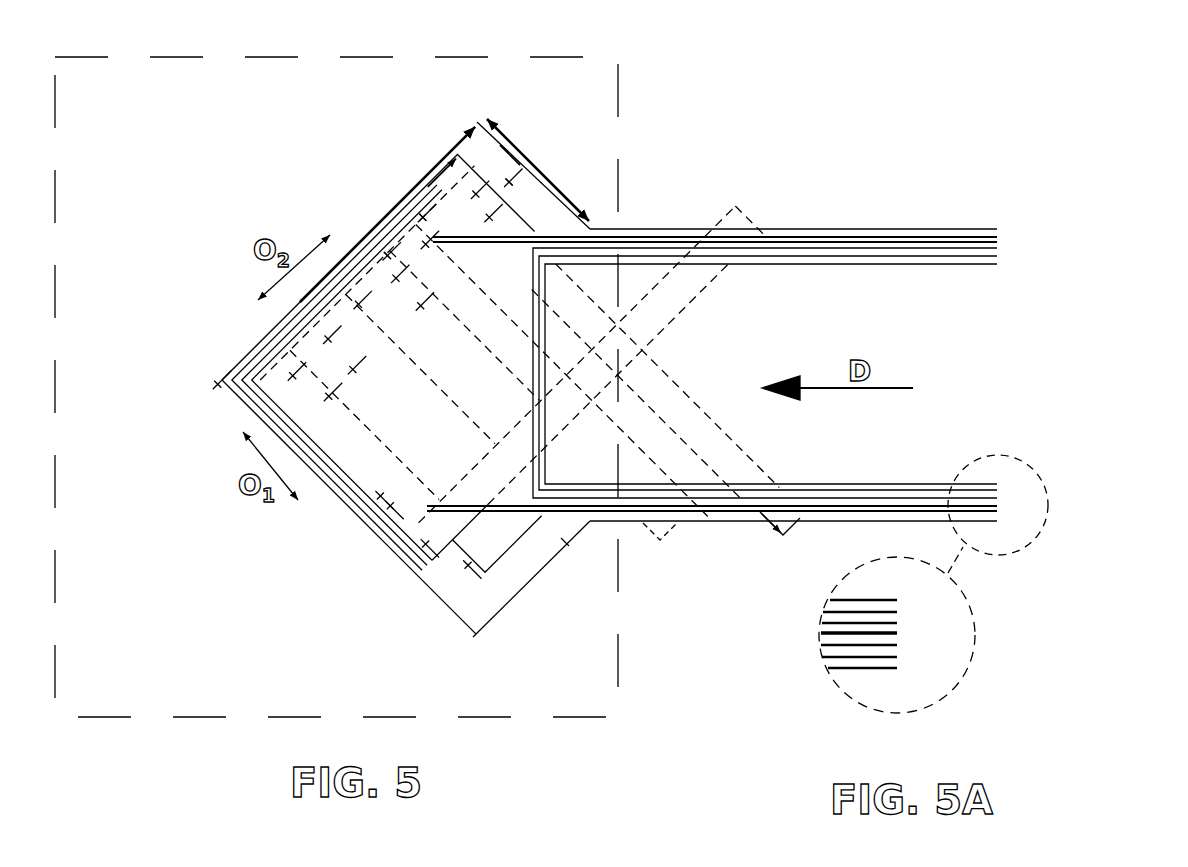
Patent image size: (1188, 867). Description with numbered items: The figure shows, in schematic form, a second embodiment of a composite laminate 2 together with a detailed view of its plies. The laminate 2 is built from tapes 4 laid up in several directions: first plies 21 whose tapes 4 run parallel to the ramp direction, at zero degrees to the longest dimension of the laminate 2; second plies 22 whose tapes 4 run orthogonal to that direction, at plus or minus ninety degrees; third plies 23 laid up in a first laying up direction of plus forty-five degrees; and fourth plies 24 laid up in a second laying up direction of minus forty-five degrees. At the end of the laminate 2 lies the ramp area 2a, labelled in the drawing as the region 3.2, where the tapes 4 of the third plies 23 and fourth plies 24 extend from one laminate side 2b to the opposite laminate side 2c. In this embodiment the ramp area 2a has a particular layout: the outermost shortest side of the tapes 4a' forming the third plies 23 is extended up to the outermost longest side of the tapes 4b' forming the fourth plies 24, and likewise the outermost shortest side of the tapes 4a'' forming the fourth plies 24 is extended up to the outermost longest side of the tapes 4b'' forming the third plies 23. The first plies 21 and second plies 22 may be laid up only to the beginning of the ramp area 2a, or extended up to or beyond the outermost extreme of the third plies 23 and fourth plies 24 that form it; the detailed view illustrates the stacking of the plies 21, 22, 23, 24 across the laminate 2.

In FIG. 5, the composite laminate 2 is at (963, 367).
In FIG. 5, the ramp area 2a is at (333, 392).
In FIG. 5, the laminate side 2b is at (1013, 244).
In FIG. 5, the opposite laminate side 2c is at (1052, 508).
In FIG. 5, the sensor body 3.2 is at (335, 515).
In FIG. 5, the tapes 4 is at (687, 293).
In FIG. 5, the outermost shortest side of the tapes forming the third plies 4a' is at (387, 188).
In FIG. 5, the outermost shortest side of the tapes forming the fourth plies 4a'' is at (667, 318).
In FIG. 5, the outermost longest side of the tapes forming the fourth plies 4b' is at (443, 123).
In FIG. 5, the outermost longest side of the tapes forming the third plies 4b'' is at (554, 140).
In FIG. 5A, the first plies 21 is at (872, 600).
In FIG. 5A, the second plies 22 is at (890, 623).
In FIG. 5, the third plies 23 is at (393, 250).
In FIG. 5A, the third plies 23 is at (895, 645).
In FIG. 5, the fourth plies 24 is at (427, 213).
In FIG. 5A, the fourth plies 24 is at (893, 633).